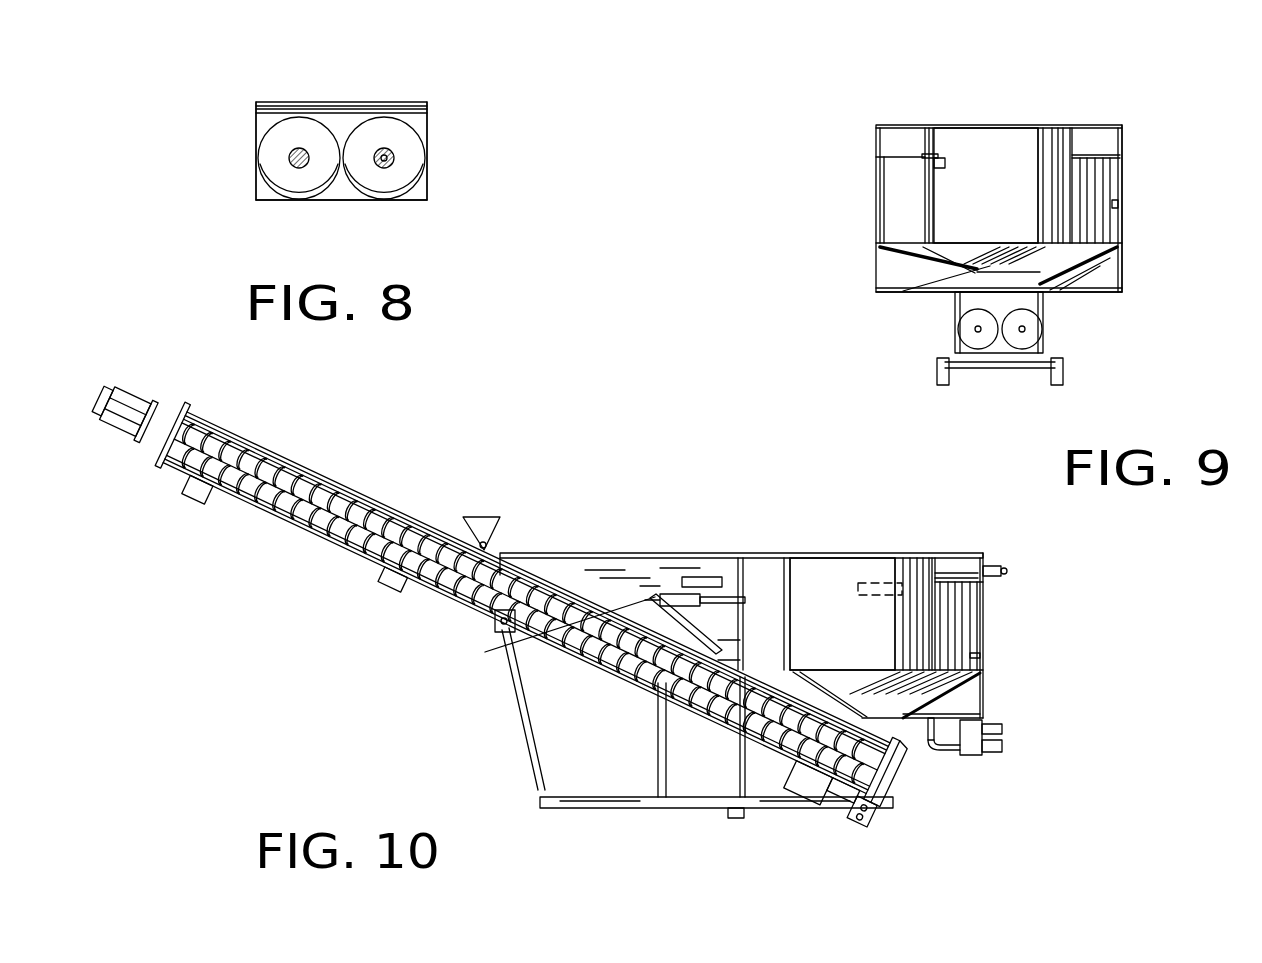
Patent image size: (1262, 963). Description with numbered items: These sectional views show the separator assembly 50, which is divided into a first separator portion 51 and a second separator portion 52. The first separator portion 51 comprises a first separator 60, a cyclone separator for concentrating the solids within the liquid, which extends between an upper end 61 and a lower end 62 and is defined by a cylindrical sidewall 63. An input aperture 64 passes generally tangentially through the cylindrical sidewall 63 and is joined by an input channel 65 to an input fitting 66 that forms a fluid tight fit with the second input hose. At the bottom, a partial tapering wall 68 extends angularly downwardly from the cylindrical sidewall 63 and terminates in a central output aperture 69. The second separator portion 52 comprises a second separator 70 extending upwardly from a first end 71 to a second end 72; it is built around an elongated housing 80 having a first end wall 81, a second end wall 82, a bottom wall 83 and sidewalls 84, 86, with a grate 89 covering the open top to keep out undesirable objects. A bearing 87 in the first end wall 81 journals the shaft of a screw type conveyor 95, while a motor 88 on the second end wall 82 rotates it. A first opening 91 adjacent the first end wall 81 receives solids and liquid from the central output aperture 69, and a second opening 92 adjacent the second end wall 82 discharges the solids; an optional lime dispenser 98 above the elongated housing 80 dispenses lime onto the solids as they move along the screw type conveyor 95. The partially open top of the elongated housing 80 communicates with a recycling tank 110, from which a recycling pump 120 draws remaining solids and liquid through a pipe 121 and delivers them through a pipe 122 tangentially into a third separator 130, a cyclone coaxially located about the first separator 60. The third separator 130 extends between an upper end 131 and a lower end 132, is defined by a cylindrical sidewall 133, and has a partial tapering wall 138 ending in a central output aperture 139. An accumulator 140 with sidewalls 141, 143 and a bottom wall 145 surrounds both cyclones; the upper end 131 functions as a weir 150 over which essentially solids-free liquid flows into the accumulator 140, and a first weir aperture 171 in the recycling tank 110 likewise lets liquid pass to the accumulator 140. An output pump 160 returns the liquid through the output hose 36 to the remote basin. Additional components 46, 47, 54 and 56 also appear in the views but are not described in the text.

In FIG. 10, the output hose 36 is at (1003, 733).
In FIG. 10, the base frame 46 is at (635, 803).
In FIG. 10, the foot 47 is at (735, 818).
In FIG. 9, the separator assembly 50 is at (1110, 128).
In FIG. 10, the separator assembly 50 is at (965, 578).
In FIG. 9, the first separator portion 51 is at (910, 128).
In FIG. 10, the first separator portion 51 is at (925, 575).
In FIG. 8, the second separator portion 52 is at (256, 186).
In FIG. 10, the second separator portion 52 is at (240, 447).
In FIG. 9, the pivot bracket 54 is at (945, 373).
In FIG. 10, the pivot bracket 54 is at (880, 802).
In FIG. 10, the support strut 56 is at (518, 690).
In FIG. 9, the first separator 60 is at (1005, 158).
In FIG. 10, the first separator 60 is at (805, 585).
In FIG. 9, the upper end 61 is at (925, 170).
In FIG. 10, the upper end 61 is at (785, 590).
In FIG. 9, the lower end 62 is at (878, 235).
In FIG. 10, the lower end 62 is at (930, 655).
In FIG. 9, the cylindrical sidewall 63 is at (1045, 150).
In FIG. 9, the input aperture 64 is at (937, 157).
In FIG. 10, the input aperture 64 is at (870, 583).
In FIG. 10, the input channel 65 is at (1005, 567).
In FIG. 10, the input fitting 66 is at (1004, 574).
In FIG. 9, the partial tapering wall 68 is at (960, 260).
In FIG. 10, the partial tapering wall 68 is at (985, 696).
In FIG. 9, the central output aperture 69 is at (1000, 258).
In FIG. 10, the central output aperture 69 is at (960, 738).
In FIG. 8, the second separator 70 is at (383, 188).
In FIG. 10, the second separator 70 is at (315, 522).
In FIG. 10, the first end 71 is at (760, 730).
In FIG. 10, the second end 72 is at (280, 505).
In FIG. 8, the elongated housing 80 is at (430, 192).
In FIG. 10, the elongated housing 80 is at (435, 562).
In FIG. 10, the first end wall 81 is at (900, 797).
In FIG. 10, the second end wall 82 is at (190, 415).
In FIG. 8, the bottom wall 83 is at (305, 200).
In FIG. 10, the bottom wall 83 is at (360, 548).
In FIG. 8, the sidewall 84 is at (430, 132).
In FIG. 8, the sidewall 86 is at (256, 133).
In FIG. 9, the bearing 87 is at (1062, 375).
In FIG. 10, the bearing 87 is at (868, 805).
In FIG. 10, the motor 88 is at (118, 435).
In FIG. 8, the grate 89 is at (292, 113).
In FIG. 10, the grate 89 is at (320, 466).
In FIG. 9, the first opening 91 is at (1000, 366).
In FIG. 10, the first opening 91 is at (945, 750).
In FIG. 10, the second opening 92 is at (190, 480).
In FIG. 8, the screw type conveyor 95 is at (368, 133).
In FIG. 9, the screw type conveyor 95 is at (1024, 329).
In FIG. 10, the screw type conveyor 95 is at (225, 480).
In FIG. 10, the dispenser 98 is at (490, 520).
In FIG. 10, the recycling tank 110 is at (575, 583).
In FIG. 10, the recycling pump 120 is at (495, 625).
In FIG. 10, the pipe 121 is at (655, 622).
In FIG. 10, the pipe 122 is at (700, 590).
In FIG. 9, the third separator 130 is at (1124, 146).
In FIG. 10, the third separator 130 is at (985, 565).
In FIG. 9, the upper end 131 is at (882, 178).
In FIG. 10, the upper end 131 is at (985, 605).
In FIG. 9, the lower end 132 is at (910, 246).
In FIG. 10, the lower end 132 is at (985, 676).
In FIG. 9, the cylindrical sidewall 133 is at (1118, 192).
In FIG. 10, the cylindrical sidewall 133 is at (982, 655).
In FIG. 9, the partial tapering wall 138 is at (1124, 268).
In FIG. 10, the partial tapering wall 138 is at (700, 808).
In FIG. 9, the central output aperture 139 is at (1080, 270).
In FIG. 10, the central output aperture 139 is at (790, 808).
In FIG. 9, the accumulator 140 is at (1123, 135).
In FIG. 9, the sidewall 141 is at (1122, 215).
In FIG. 9, the sidewall 143 is at (876, 200).
In FIG. 9, the bottom wall 145 is at (1124, 290).
In FIG. 10, the bottom wall 145 is at (985, 713).
In FIG. 9, the weir 150 is at (890, 128).
In FIG. 10, the weir 150 is at (760, 560).
In FIG. 10, the output pump 160 is at (975, 760).
In FIG. 10, the first weir aperture 171 is at (718, 652).